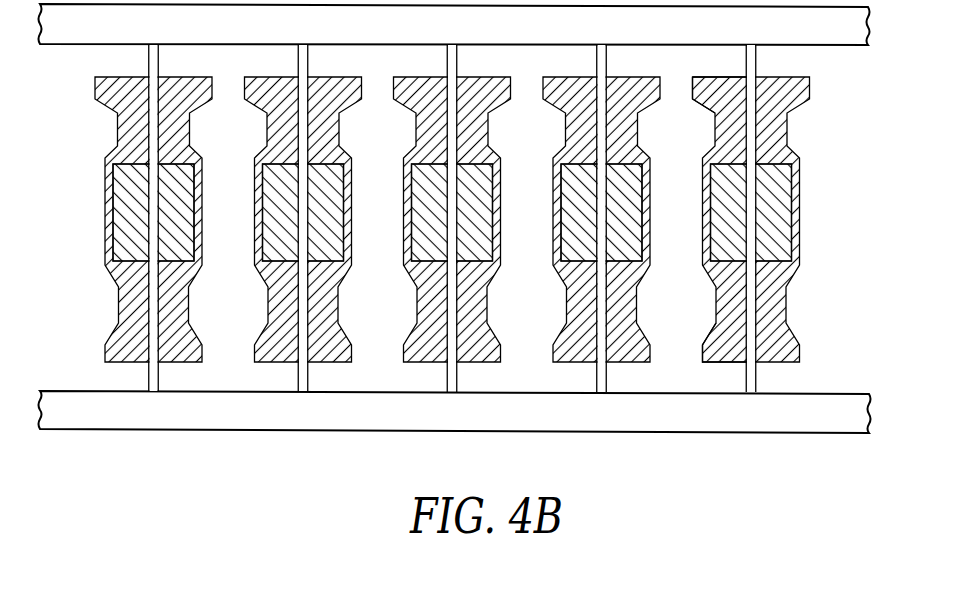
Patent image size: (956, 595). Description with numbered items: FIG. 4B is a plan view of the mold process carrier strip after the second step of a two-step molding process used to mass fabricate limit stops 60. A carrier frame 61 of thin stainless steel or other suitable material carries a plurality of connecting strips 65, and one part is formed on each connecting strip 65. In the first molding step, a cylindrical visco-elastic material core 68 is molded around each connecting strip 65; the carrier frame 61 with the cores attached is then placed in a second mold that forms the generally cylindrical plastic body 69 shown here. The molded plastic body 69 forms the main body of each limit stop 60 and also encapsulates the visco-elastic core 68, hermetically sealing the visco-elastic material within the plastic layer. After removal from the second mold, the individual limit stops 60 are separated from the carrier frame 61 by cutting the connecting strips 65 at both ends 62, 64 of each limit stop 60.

The limit stop 60 is at (790, 82).
The carrier frame 61 is at (703, 428).
The end of limit stop 62 is at (702, 360).
The end of limit stop 64 is at (706, 100).
The connecting strip 65 is at (757, 378).
The visco-elastic material core 68 is at (780, 212).
The plastic body 69 is at (772, 138).